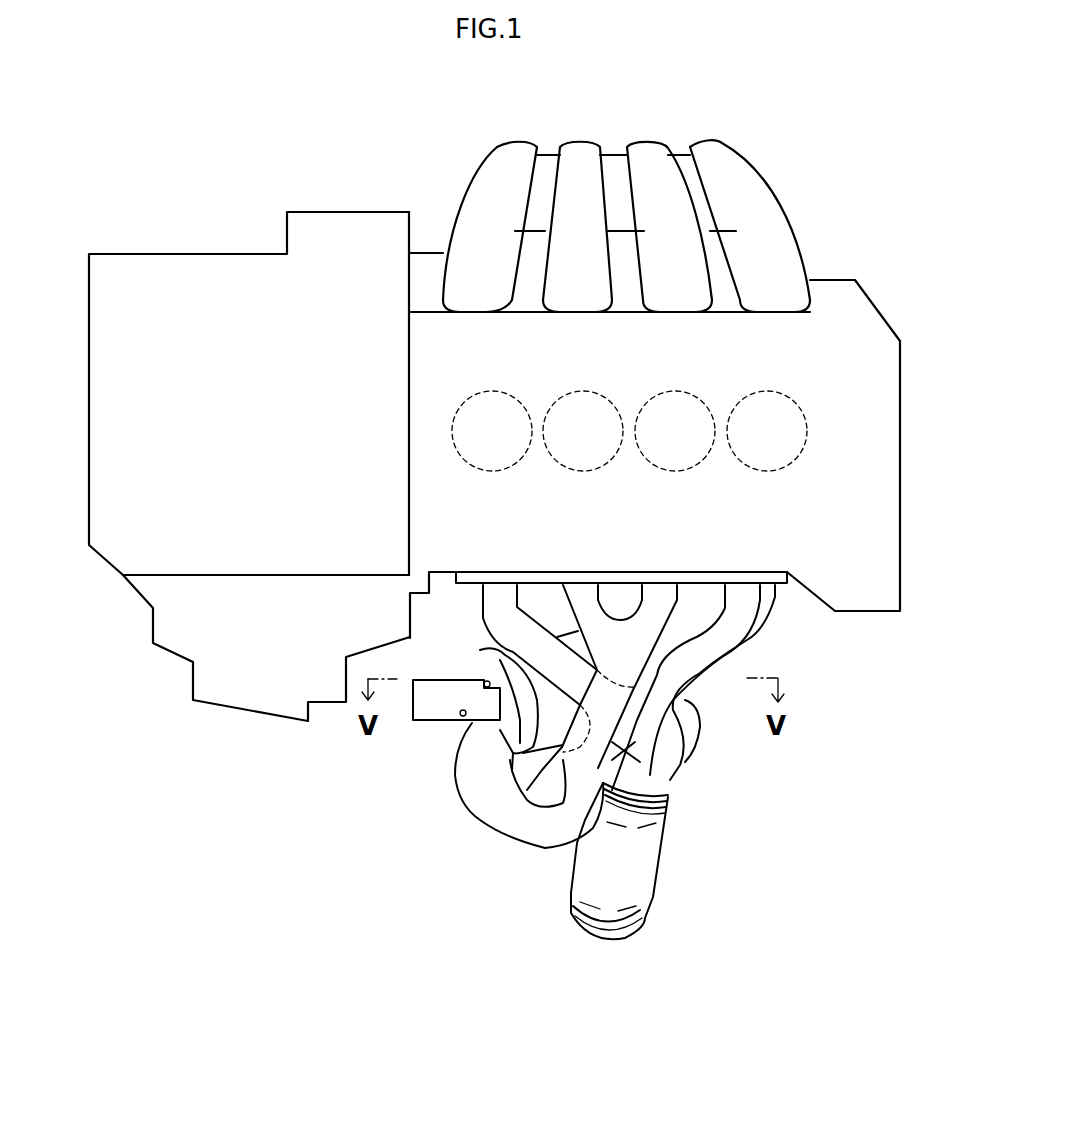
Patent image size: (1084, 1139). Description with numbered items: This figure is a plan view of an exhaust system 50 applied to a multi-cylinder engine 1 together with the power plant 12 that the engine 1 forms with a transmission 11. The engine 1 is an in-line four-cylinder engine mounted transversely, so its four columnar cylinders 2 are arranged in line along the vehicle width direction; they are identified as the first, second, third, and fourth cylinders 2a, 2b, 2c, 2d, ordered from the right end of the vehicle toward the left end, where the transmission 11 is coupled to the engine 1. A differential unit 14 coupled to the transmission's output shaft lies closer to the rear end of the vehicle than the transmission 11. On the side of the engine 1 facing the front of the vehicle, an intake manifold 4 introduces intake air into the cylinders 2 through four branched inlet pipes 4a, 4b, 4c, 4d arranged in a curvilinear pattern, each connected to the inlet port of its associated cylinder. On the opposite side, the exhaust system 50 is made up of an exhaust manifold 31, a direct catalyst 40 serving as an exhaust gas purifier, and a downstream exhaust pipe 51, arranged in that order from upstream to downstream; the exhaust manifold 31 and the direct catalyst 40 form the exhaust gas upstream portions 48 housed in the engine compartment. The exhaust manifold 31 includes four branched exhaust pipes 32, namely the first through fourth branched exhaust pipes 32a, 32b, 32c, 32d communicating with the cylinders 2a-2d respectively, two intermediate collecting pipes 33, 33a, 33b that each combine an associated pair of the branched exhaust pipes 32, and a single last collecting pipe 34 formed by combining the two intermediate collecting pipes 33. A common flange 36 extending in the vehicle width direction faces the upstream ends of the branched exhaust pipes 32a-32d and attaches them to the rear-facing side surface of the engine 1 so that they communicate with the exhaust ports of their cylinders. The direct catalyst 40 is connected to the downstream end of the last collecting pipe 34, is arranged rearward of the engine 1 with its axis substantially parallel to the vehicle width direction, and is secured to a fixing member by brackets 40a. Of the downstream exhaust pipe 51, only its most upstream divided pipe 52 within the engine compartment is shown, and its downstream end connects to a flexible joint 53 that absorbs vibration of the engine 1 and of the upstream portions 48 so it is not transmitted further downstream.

The multi-cylinder engine 1 is at (874, 288).
The transmission 11 is at (152, 253).
The power plant 12 is at (508, 457).
The differential unit 14 is at (165, 651).
The cylinders 2 is at (630, 404).
The first cylinder 2a is at (731, 415).
The second cylinder 2b is at (639, 415).
The third cylinder 2c is at (547, 415).
The fourth cylinder 2d is at (456, 415).
The intake manifold 4 is at (627, 195).
The branched inlet pipe 4a is at (706, 143).
The branched inlet pipe 4b is at (640, 143).
The branched inlet pipe 4c is at (581, 143).
The branched inlet pipe 4d is at (518, 143).
The exhaust manifold 31 is at (656, 638).
The branched exhaust pipes 32 is at (656, 638).
The first branched exhaust pipe 32a is at (771, 585).
The second branched exhaust pipe 32b is at (684, 585).
The third branched exhaust pipe 32c is at (557, 585).
The fourth branched exhaust pipe 32d is at (485, 585).
The intermediate collecting pipes 33 is at (581, 840).
The intermediate collecting pipe 33a is at (656, 802).
The intermediate collecting pipe 33b is at (540, 833).
The last collecting pipe 34 is at (477, 753).
The flange 36 is at (778, 588).
The direct catalyst 40 is at (486, 686).
The brackets 40a is at (432, 680).
The exhaust gas upstream portions 48 is at (471, 822).
The exhaust system 50 is at (702, 761).
The downstream exhaust pipe 51 is at (702, 761).
The most upstream divided pipe 52 is at (680, 753).
The flexible joint 53 is at (577, 868).